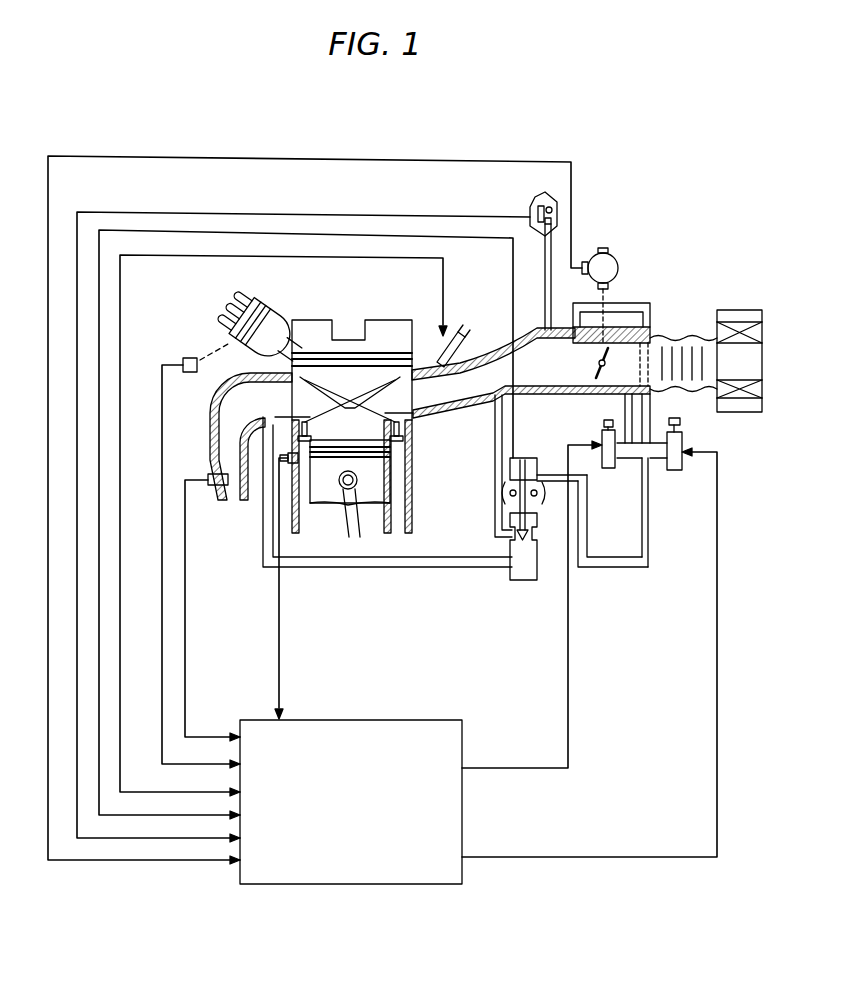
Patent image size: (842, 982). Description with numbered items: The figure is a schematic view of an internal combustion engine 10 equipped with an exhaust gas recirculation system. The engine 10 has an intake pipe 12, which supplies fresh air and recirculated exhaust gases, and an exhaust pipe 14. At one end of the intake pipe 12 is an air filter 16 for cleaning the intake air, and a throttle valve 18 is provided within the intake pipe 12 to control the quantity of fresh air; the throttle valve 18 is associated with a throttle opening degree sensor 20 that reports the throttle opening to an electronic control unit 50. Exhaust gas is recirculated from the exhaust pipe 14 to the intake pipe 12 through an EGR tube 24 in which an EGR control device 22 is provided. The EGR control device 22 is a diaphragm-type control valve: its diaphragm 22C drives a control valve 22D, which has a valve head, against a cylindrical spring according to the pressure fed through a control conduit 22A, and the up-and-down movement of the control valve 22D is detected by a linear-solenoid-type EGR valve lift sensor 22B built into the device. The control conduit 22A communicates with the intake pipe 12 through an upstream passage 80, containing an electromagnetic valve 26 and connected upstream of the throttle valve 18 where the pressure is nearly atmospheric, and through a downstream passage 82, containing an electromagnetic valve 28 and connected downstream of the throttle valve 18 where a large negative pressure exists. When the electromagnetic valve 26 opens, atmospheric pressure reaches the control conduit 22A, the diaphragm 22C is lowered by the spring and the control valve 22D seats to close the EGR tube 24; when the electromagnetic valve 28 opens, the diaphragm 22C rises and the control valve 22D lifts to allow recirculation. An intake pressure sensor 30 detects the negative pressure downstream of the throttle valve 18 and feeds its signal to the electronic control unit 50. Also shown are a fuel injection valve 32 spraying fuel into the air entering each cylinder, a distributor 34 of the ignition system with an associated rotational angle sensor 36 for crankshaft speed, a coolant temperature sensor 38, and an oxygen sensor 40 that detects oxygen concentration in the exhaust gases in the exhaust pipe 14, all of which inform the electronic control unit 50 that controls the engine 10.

The internal combustion engine 10 is at (352, 316).
The intake pipe 12 is at (456, 410).
The exhaust pipe 14 is at (251, 436).
The air filter 16 is at (717, 312).
The throttle valve 18 is at (594, 366).
The throttle opening degree sensor 20 is at (616, 260).
The EGR control device 22 is at (529, 505).
The control conduit 22A is at (556, 474).
The EGR valve lift sensor 22B is at (530, 458).
The diaphragm 22C is at (512, 494).
The control valve 22D is at (545, 505).
The EGR tube 24 is at (492, 496).
The electromagnetic valve 26 is at (606, 468).
The electromagnetic valve 28 is at (676, 471).
The intake pressure sensor 30 is at (535, 203).
The fuel injection valve 32 is at (431, 342).
The distributor 34 is at (262, 312).
The rotational angle sensor 36 is at (184, 356).
The coolant temperature sensor 38 is at (289, 462).
The oxygen sensor 40 is at (208, 478).
The electronic control unit 50 is at (371, 886).
The upstream passage 80 is at (624, 396).
The downstream passage 82 is at (655, 396).